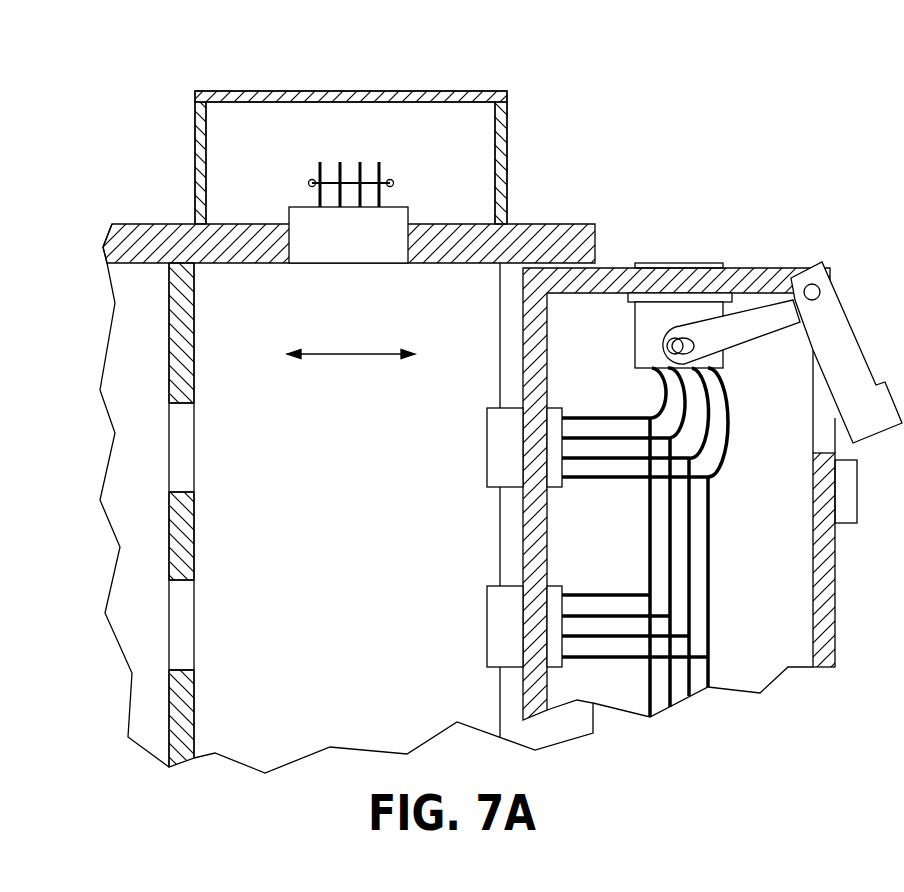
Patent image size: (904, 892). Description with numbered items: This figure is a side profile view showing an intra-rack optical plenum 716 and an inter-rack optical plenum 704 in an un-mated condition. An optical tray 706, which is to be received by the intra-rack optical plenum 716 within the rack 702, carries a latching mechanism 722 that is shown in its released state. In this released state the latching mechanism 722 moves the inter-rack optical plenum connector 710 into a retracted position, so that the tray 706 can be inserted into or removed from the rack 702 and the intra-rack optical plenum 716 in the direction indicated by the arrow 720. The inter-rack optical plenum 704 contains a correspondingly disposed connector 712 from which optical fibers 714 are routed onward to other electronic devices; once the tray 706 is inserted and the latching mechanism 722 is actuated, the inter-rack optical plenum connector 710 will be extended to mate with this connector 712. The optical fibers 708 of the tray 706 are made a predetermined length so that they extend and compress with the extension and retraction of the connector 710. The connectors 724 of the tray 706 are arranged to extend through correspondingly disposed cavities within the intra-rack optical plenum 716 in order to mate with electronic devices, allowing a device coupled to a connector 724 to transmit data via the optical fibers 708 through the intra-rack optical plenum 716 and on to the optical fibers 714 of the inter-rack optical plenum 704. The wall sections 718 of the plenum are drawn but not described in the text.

The rack 702 is at (562, 224).
The inter-rack optical plenum 704 is at (350, 90).
The optical tray 706 is at (836, 577).
The optical fibers 708 is at (735, 418).
The inter-rack optical plenum connector 710 is at (680, 263).
The connector 712 is at (303, 207).
The optical fibers 714 is at (394, 183).
The intra-rack optical plenum 716 is at (330, 560).
The wall 718 is at (183, 449).
The arrow 720 is at (352, 354).
The latching mechanism 722 is at (858, 308).
The connectors 724 is at (487, 450).